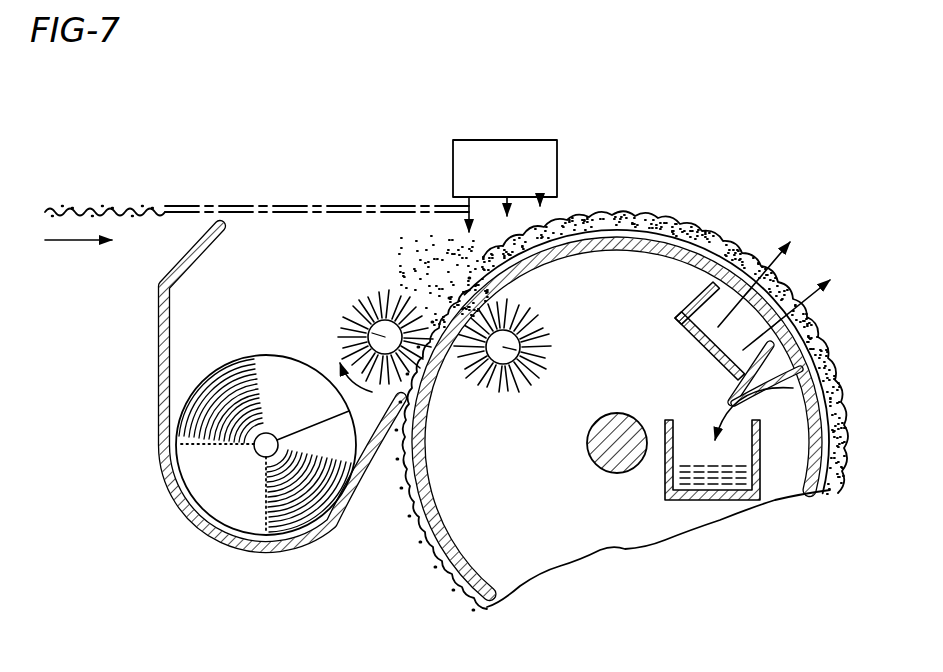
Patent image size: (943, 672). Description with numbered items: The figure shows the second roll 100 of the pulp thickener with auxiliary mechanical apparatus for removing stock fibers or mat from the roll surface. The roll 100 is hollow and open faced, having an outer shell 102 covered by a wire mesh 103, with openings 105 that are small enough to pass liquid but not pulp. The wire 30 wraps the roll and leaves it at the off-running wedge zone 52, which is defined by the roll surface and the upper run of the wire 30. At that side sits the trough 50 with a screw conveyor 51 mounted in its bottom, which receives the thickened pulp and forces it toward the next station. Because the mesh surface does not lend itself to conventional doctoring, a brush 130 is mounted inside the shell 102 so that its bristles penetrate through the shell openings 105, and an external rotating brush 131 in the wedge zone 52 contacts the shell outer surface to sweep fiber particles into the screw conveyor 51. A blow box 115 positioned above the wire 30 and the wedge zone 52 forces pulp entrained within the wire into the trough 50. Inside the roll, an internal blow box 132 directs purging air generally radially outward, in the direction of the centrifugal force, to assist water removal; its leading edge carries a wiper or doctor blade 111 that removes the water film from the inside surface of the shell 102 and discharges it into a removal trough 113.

The wire 30 is at (80, 210).
The trough 50 is at (160, 367).
The screw conveyor 51 is at (212, 487).
The wedge zone 52 is at (445, 268).
The roll 100 is at (456, 590).
The outer shell 102 is at (449, 534).
The wire mesh 103 is at (424, 527).
The openings 105 is at (428, 418).
The wiper or doctor blade 111 is at (733, 399).
The removal trough 113 is at (668, 484).
The blow box 115 is at (470, 140).
The brush 130 is at (536, 333).
The external rotating brush 131 is at (345, 317).
The internal blow box 132 is at (700, 350).